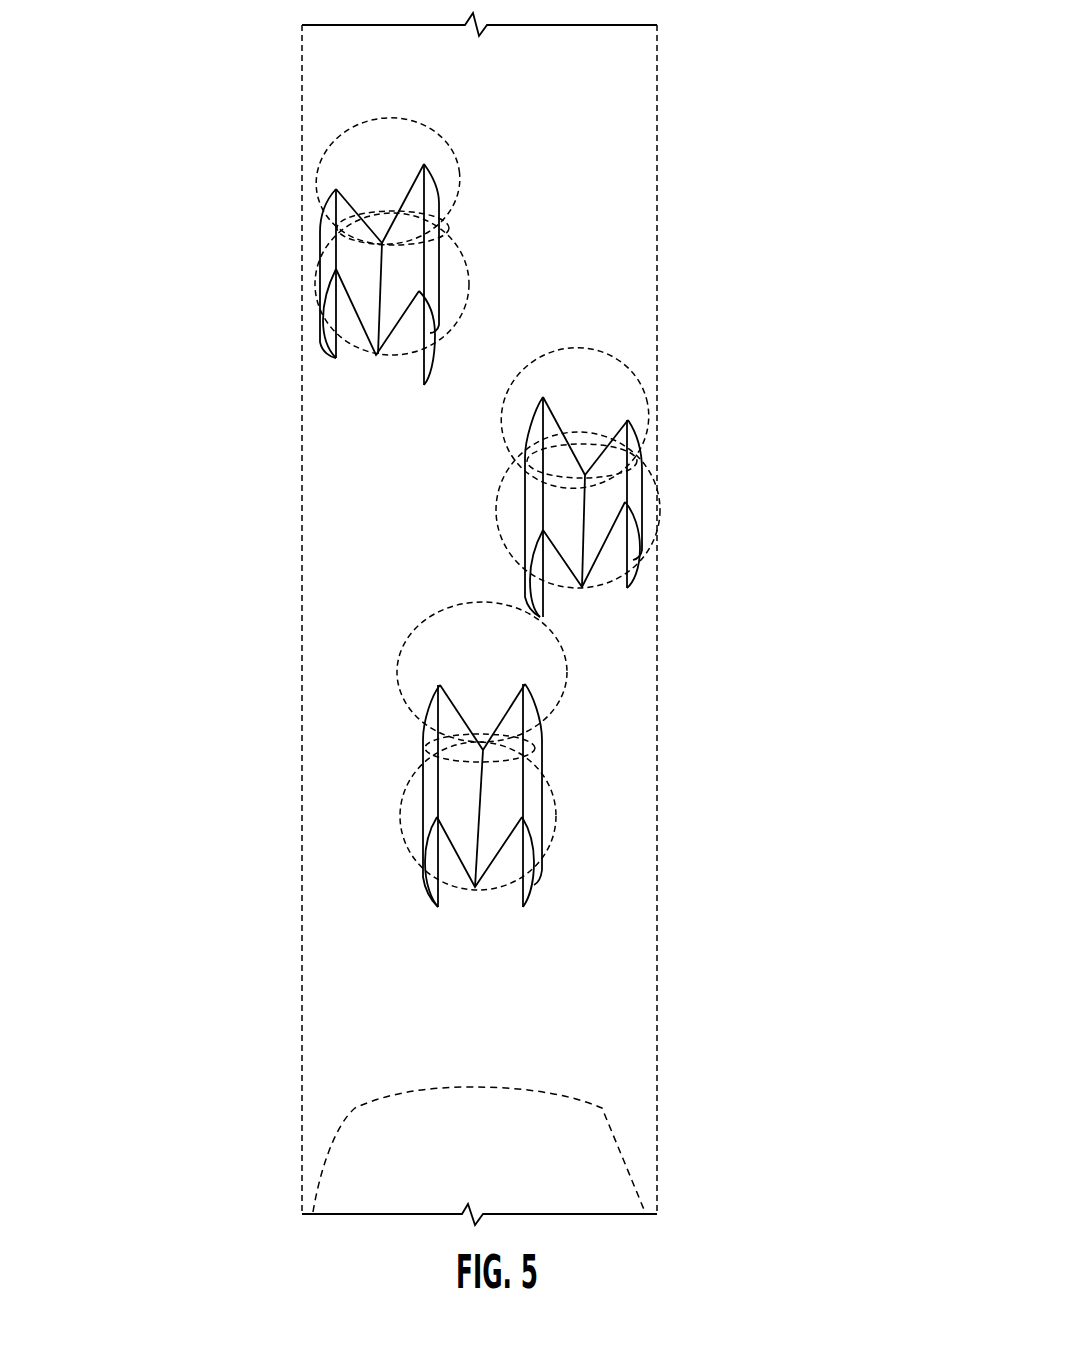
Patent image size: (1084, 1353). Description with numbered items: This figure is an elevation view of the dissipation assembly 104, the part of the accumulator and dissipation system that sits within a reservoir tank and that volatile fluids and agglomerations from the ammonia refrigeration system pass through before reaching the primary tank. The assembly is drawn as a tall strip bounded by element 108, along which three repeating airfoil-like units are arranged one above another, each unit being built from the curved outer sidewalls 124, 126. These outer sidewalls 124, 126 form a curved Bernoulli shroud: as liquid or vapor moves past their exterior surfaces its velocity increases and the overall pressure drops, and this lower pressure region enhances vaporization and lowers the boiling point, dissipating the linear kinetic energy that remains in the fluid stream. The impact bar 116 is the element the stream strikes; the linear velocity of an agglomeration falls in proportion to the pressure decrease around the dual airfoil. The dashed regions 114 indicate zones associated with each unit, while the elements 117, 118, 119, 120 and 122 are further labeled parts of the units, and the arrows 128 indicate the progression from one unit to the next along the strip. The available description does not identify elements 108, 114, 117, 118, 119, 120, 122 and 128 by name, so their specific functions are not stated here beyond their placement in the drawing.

The dissipation assembly 104 is at (730, 117).
The web substrate 108 is at (642, 60).
The fold region 114 is at (458, 170).
The impact bar 116 is at (286, 293).
The first fold 117 is at (286, 152).
The inner wall 118 is at (558, 523).
The third fold 119 is at (286, 358).
The outer wall 120 is at (615, 498).
The fold direction 122 is at (392, 326).
The outer sidewall 124 is at (328, 247).
The outer sidewall 126 is at (432, 268).
The progression direction 128 is at (452, 425).